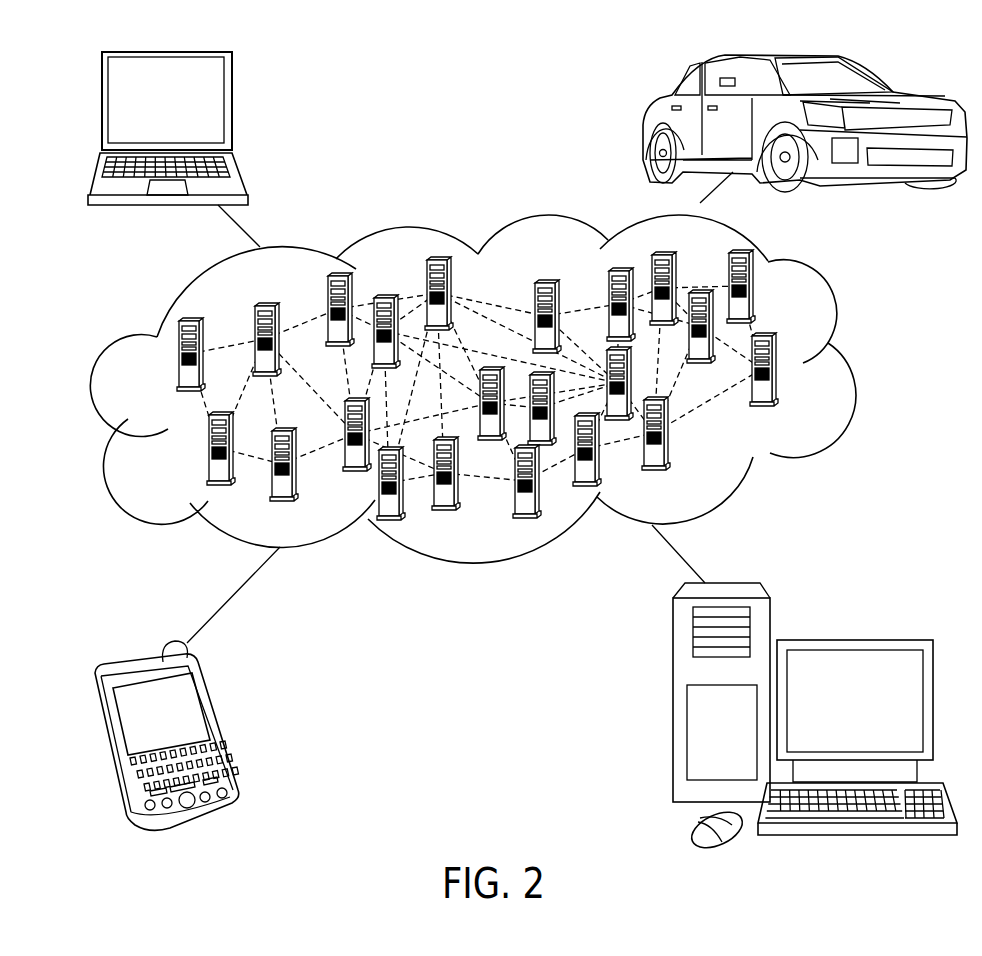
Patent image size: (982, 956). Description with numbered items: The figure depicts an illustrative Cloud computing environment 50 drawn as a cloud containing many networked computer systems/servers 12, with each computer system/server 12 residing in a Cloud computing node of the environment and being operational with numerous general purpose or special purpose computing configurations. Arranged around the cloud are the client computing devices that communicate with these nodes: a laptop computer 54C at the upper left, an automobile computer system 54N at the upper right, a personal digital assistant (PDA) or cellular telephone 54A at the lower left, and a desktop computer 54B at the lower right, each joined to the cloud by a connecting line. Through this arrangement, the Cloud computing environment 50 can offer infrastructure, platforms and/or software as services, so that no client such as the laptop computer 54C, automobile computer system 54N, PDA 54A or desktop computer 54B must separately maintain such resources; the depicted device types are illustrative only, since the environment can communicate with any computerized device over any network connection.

The laptop computer 54C is at (232, 106).
The automobile computer system 54N is at (641, 125).
The personal digital assistant (PDA) or cellular telephone 54A is at (223, 728).
The desktop computer 54B is at (853, 640).
The Cloud computing environment 50 is at (850, 366).
The computer system/server 12 is at (798, 393).